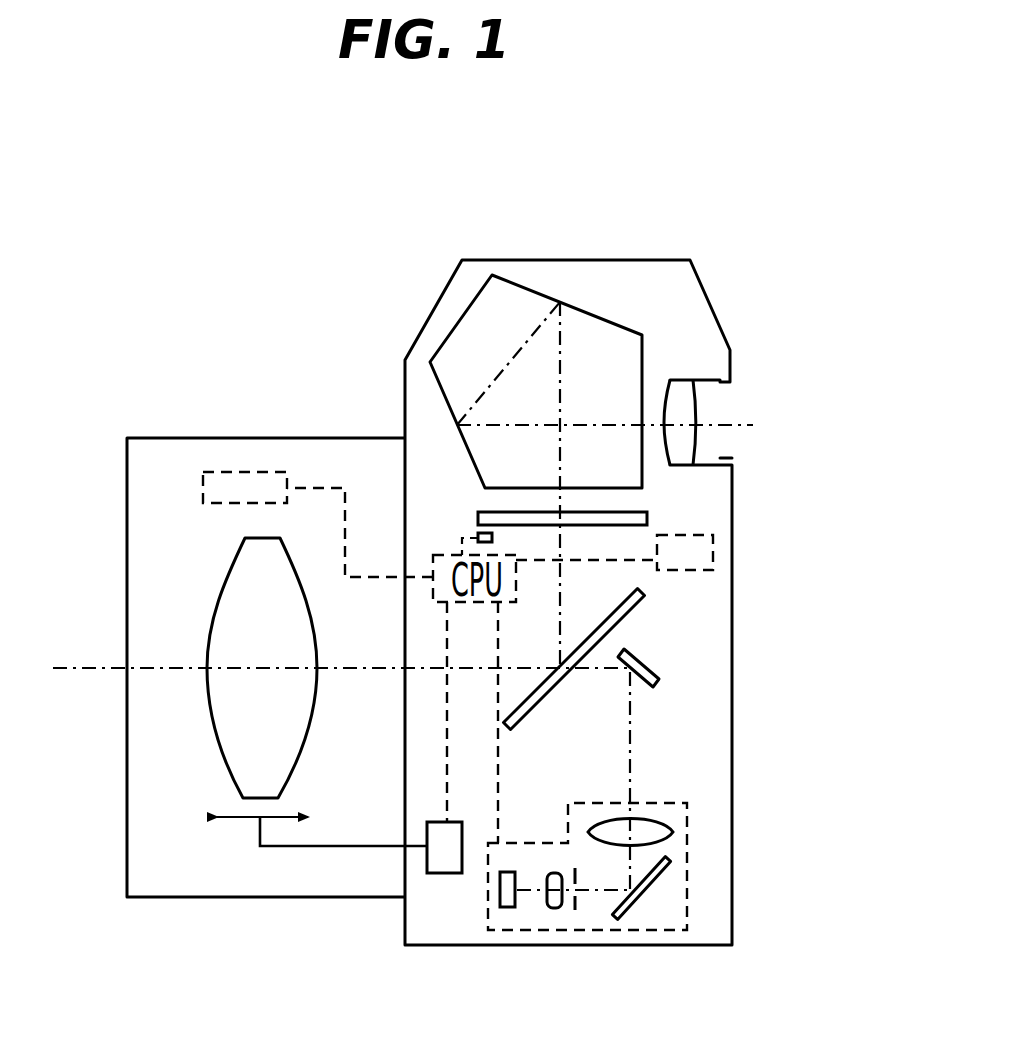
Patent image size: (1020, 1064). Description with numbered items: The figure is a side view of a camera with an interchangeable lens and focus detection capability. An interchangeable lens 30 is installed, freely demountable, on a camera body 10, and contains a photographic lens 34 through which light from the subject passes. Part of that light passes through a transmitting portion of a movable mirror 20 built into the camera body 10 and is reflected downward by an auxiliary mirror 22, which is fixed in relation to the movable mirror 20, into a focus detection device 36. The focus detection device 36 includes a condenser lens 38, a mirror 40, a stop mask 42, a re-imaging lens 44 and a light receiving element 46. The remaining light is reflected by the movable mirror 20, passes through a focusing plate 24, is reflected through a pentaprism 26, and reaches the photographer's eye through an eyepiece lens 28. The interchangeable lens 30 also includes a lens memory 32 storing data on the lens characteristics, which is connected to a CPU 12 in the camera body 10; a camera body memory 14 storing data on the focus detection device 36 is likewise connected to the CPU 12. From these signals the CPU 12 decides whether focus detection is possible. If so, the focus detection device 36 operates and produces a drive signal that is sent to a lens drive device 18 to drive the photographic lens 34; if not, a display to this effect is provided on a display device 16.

The camera body 10 is at (478, 191).
The CPU 12 is at (451, 555).
The camera body memory 14 is at (715, 553).
The display device 16 is at (495, 532).
The lens drive device 18 is at (438, 868).
The movable mirror 20 is at (637, 610).
The auxiliary mirror 22 is at (660, 672).
The focusing plate 24 is at (647, 517).
The pentaprism 26 is at (622, 338).
The eyepiece lens 28 is at (687, 415).
The interchangeable lens 30 is at (134, 432).
The lens memory 32 is at (230, 487).
The photographic lens 34 is at (222, 719).
The focus detection device 36 is at (666, 801).
The condenser lens 38 is at (660, 837).
The mirror 40 is at (670, 873).
The stop mask 42 is at (575, 907).
The re-imaging lens 44 is at (552, 908).
The light receiving element 46 is at (505, 903).